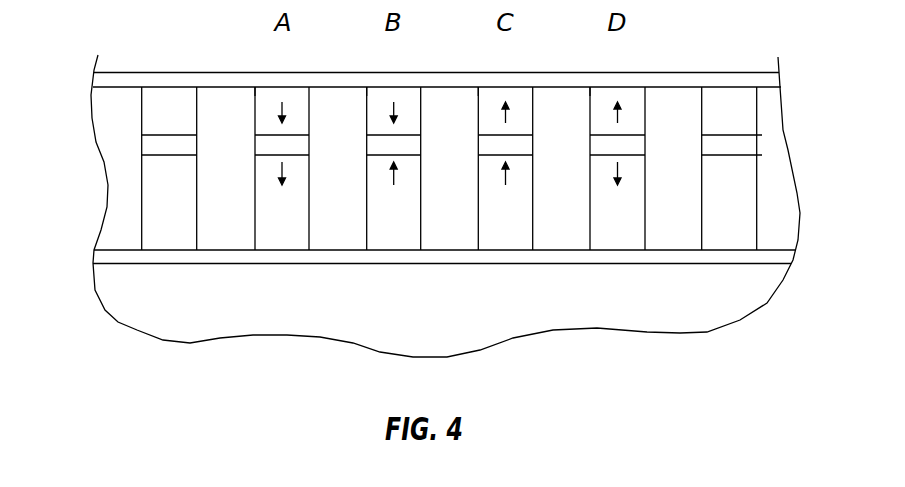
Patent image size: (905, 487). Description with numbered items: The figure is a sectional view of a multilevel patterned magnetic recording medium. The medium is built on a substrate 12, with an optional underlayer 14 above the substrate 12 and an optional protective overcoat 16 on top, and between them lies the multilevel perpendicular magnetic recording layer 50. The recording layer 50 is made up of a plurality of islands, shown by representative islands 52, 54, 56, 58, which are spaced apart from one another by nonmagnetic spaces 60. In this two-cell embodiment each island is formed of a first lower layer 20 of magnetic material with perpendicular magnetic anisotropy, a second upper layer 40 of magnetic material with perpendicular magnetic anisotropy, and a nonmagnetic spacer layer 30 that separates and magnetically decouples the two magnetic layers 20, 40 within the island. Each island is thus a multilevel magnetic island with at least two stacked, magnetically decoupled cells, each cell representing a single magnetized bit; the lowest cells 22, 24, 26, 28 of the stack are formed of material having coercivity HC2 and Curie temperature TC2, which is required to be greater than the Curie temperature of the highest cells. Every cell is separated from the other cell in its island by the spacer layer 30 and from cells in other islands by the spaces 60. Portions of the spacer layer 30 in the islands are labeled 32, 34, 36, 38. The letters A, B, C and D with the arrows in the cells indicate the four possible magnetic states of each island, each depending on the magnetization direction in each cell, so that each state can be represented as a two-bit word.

The substrate 12 is at (747, 307).
The underlayer 14 is at (780, 257).
The protective overcoat 16 is at (777, 79).
The first lower layer 20 is at (812, 155).
The cell 22 is at (282, 243).
The cell 24 is at (394, 243).
The cell 26 is at (508, 243).
The cell 28 is at (621, 243).
The nonmagnetic spacer layer 30 is at (466, 147).
The first intermediate segment 32 is at (255, 146).
The second intermediate segment 34 is at (367, 146).
The third intermediate segment 36 is at (478, 146).
The fourth intermediate segment 38 is at (590, 146).
The second upper layer 40 is at (812, 88).
The multilevel perpendicular magnetic recording layer 50 is at (67, 88).
The island 52 is at (255, 92).
The island 54 is at (367, 92).
The island 56 is at (478, 92).
The island 58 is at (590, 92).
The nonmagnetic spaces 60 is at (324, 242).